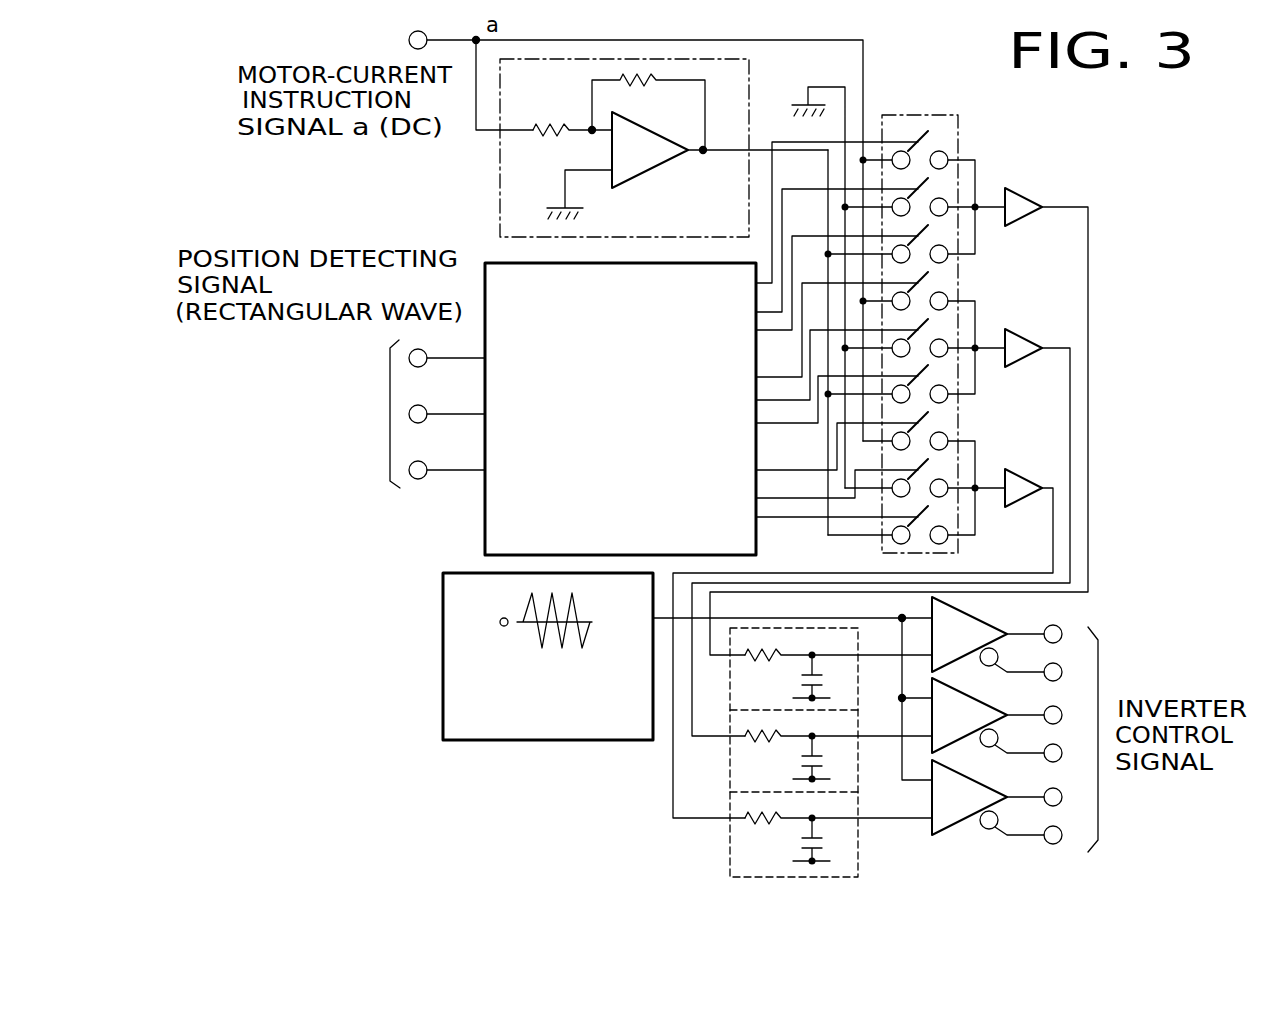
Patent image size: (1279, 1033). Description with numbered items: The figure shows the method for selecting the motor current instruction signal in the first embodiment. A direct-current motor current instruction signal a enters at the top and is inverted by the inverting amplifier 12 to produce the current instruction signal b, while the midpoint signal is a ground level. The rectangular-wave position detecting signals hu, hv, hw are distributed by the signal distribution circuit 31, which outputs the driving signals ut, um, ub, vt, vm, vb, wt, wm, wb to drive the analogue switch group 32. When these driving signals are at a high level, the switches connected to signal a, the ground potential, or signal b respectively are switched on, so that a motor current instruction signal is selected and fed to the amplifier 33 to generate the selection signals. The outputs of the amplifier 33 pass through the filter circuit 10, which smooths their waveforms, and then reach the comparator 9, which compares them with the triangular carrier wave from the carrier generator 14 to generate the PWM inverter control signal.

The inverting amplifier 12 is at (750, 87).
The signal distribution circuit 31 is at (485, 541).
The analogue switch group 32 is at (958, 128).
The amplifier 33 is at (1029, 198).
The carrier generator 14 is at (513, 742).
The filter circuit 10 is at (730, 840).
The comparator 9 is at (957, 835).